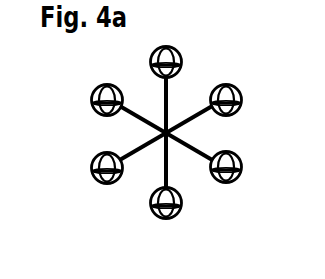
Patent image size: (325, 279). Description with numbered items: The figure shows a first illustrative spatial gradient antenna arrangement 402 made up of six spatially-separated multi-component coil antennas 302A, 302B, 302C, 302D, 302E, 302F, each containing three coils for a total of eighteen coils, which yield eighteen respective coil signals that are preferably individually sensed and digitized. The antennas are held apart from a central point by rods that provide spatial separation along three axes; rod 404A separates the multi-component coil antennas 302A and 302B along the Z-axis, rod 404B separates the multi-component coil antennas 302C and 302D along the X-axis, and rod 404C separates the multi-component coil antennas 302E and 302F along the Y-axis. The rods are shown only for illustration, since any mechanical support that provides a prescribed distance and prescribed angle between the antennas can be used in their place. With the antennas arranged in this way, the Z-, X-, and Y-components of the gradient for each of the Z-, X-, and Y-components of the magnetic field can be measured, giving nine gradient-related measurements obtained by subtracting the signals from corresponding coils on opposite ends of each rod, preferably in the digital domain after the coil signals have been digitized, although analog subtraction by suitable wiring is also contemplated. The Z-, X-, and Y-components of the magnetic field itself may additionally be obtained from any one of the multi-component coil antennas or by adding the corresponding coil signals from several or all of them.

The spatial gradient antenna arrangement 402 is at (167, 154).
The multi-component coil antenna 302A is at (150, 70).
The multi-component coil antenna 302B is at (180, 214).
The multi-component coil antenna 302C is at (93, 177).
The multi-component coil antenna 302D is at (240, 106).
The multi-component coil antenna 302E is at (240, 169).
The multi-component coil antenna 302F is at (91, 100).
The rod 404A is at (168, 103).
The rod 404B is at (197, 121).
The rod 404C is at (195, 155).